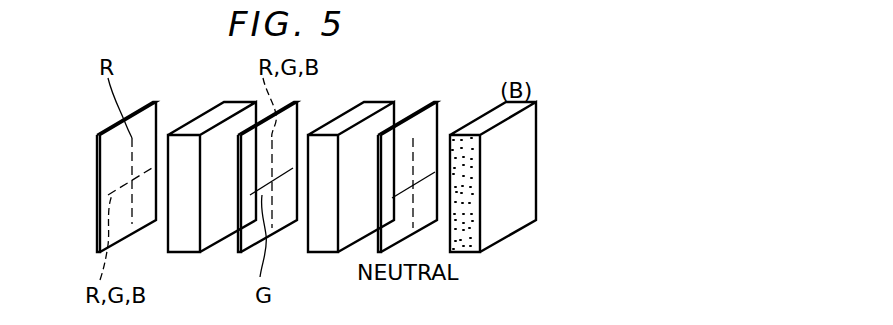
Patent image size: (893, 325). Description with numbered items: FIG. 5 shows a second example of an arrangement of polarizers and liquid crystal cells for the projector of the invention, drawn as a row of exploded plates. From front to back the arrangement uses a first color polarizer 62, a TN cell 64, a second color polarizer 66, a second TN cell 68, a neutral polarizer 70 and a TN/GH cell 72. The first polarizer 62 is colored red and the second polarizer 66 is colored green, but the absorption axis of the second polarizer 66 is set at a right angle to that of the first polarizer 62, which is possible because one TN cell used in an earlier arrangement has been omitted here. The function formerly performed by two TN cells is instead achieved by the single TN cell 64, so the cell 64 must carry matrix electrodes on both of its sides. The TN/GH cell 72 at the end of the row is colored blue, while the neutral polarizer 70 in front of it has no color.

The first color polarizer 62 is at (156, 102).
The TN cell 64 is at (214, 102).
The second color polarizer 66 is at (240, 252).
The TN cell 68 is at (372, 102).
The neutral polarizer 70 is at (437, 102).
The TN/GH cell 72 is at (468, 255).